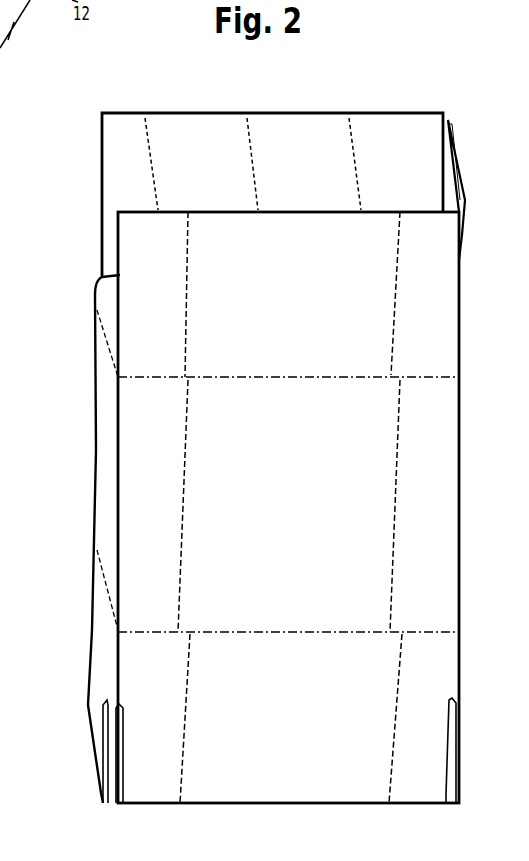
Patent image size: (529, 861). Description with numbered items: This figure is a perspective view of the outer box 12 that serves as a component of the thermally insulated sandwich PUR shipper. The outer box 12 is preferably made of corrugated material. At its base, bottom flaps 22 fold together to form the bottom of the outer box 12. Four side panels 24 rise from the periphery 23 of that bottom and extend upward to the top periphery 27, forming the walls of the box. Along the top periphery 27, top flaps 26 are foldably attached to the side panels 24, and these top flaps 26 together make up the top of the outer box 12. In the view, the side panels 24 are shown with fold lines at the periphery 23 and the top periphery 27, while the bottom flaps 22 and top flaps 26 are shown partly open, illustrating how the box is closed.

The outer box 12 is at (305, 78).
The bottom flaps 22 is at (135, 803).
The periphery of the bottom 23 is at (148, 640).
The side panels 24 is at (143, 504).
The top flaps 26 is at (398, 216).
The top periphery 27 is at (160, 383).